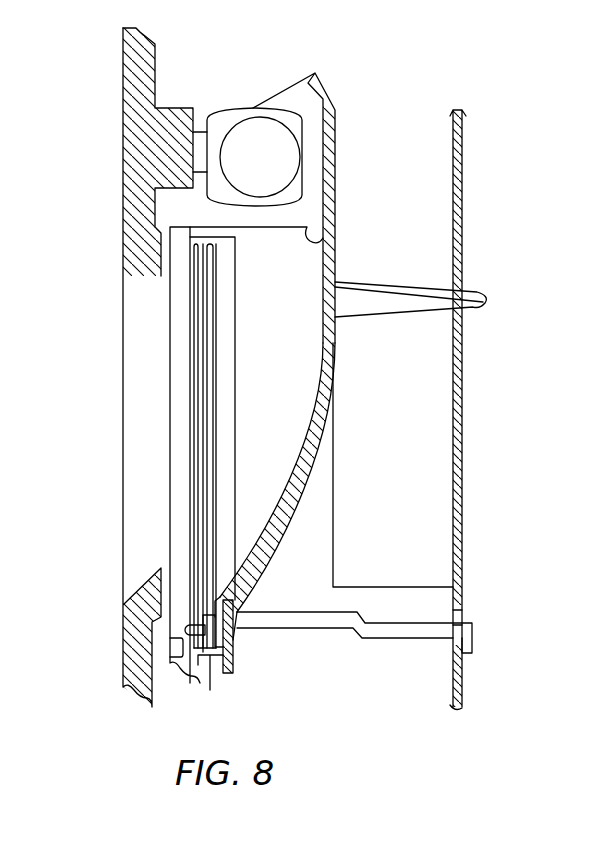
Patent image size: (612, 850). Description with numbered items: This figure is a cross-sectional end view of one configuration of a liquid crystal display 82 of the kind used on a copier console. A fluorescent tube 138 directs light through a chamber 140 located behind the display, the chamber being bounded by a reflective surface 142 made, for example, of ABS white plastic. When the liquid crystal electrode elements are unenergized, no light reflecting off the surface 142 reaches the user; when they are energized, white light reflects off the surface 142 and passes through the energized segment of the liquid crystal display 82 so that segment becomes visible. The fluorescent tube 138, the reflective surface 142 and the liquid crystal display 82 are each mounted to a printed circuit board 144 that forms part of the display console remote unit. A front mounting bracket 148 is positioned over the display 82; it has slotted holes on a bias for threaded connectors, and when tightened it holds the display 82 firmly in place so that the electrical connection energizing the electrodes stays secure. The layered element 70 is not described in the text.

The membrane stack 70 is at (192, 362).
The liquid crystal display 82 is at (112, 483).
The fluorescent tube 138 is at (250, 126).
The chamber 140 is at (313, 278).
The reflective surface 142 is at (321, 384).
The printed circuit board 144 is at (465, 476).
The front mounting bracket 148 is at (130, 136).